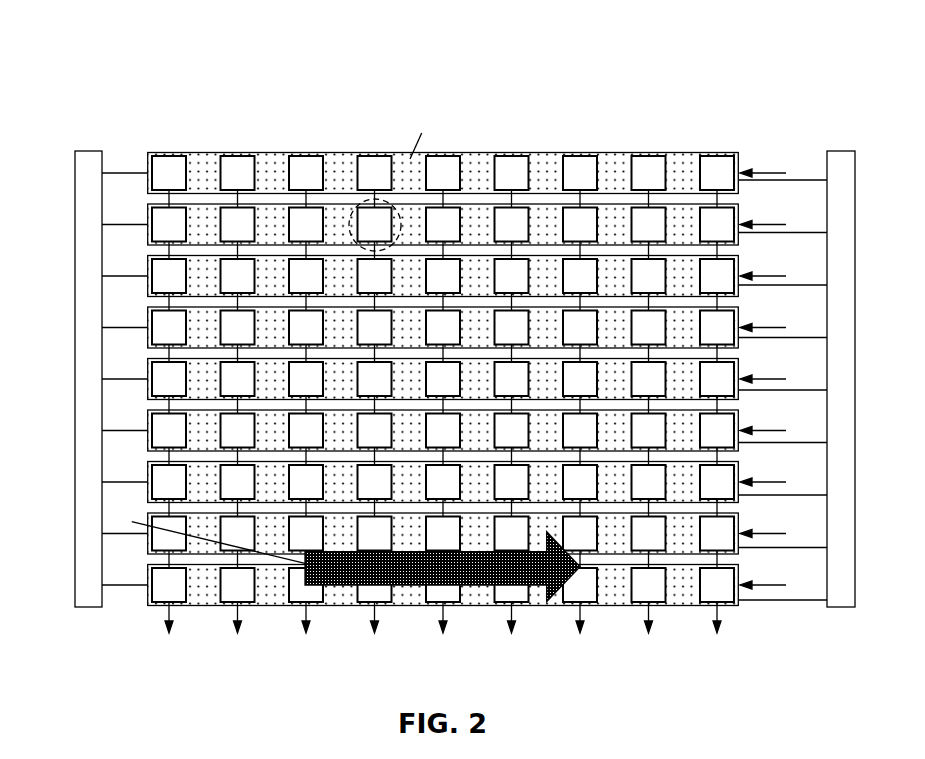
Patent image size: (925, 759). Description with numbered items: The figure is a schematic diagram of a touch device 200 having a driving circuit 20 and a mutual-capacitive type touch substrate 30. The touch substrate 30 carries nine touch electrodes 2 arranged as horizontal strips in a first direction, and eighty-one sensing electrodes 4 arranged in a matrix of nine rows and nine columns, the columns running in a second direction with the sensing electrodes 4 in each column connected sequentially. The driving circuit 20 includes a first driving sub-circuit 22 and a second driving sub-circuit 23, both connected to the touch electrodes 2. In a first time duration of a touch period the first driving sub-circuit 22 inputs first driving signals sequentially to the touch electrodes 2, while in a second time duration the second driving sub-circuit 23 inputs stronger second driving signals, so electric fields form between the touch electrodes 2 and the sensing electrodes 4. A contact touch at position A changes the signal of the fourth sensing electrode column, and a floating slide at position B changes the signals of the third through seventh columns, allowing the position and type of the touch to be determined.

The touch device 200 is at (160, 113).
The driving circuit 20 is at (470, 334).
The first driving sub-circuit 22 is at (843, 232).
The second driving sub-circuit 23 is at (74, 267).
The mutual-capacitive type touch substrate 30 is at (738, 606).
The sensing electrodes 4 is at (583, 159).
The touch electrodes 2 is at (618, 159).